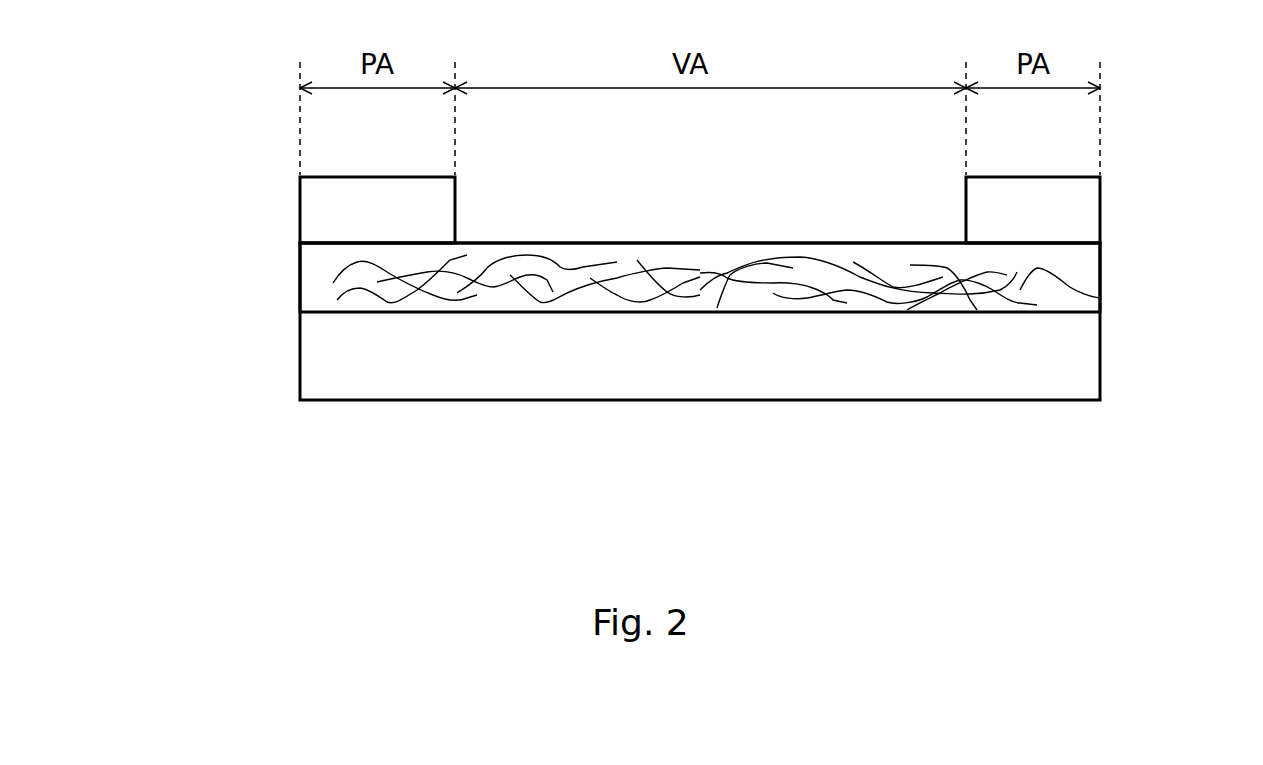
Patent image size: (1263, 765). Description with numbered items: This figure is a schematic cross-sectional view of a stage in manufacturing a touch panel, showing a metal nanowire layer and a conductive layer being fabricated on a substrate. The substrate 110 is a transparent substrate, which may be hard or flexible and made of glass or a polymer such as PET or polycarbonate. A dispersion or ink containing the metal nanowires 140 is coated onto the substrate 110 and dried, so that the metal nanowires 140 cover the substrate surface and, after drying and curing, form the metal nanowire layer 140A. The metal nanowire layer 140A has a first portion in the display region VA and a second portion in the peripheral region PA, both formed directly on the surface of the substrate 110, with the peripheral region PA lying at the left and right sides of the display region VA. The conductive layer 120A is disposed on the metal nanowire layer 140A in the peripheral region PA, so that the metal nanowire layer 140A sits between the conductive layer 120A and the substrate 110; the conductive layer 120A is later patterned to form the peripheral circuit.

The substrate 110 is at (328, 368).
The metal nanowires 140 is at (330, 282).
The metal nanowire layer 140A is at (1063, 277).
The conductive layer 120A is at (1064, 200).